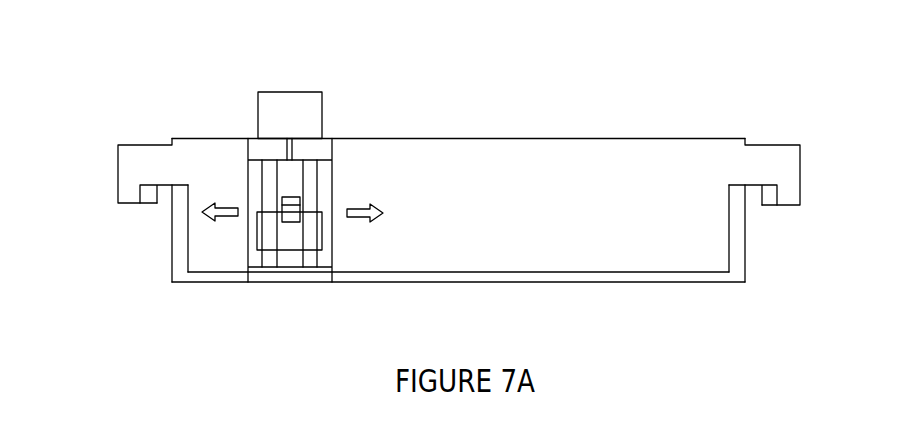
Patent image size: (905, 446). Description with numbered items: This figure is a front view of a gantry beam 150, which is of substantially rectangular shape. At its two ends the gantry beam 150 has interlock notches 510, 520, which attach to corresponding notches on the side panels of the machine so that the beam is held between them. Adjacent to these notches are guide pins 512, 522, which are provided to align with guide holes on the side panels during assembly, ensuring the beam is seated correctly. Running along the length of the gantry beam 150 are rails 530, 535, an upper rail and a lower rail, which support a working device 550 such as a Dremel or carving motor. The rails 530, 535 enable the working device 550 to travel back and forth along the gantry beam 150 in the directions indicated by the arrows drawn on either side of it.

The gantry beam 150 is at (137, 158).
The interlock notch 510 is at (167, 200).
The guide pin 512 is at (163, 190).
The interlock notch 520 is at (752, 187).
The guide pin 522 is at (753, 187).
The rail 530 is at (508, 138).
The rail 535 is at (662, 273).
The working device 550 is at (298, 123).